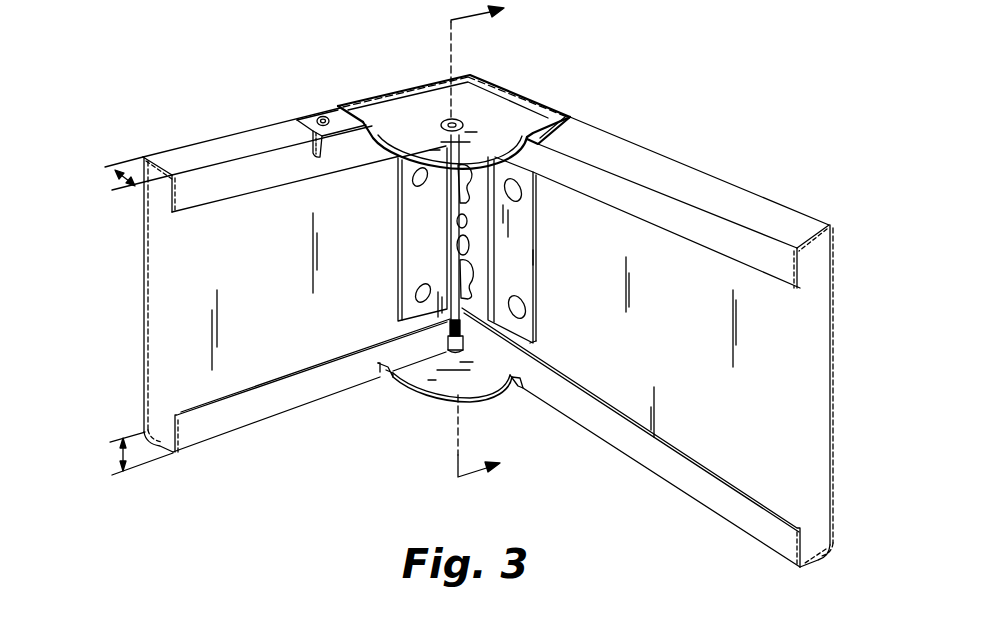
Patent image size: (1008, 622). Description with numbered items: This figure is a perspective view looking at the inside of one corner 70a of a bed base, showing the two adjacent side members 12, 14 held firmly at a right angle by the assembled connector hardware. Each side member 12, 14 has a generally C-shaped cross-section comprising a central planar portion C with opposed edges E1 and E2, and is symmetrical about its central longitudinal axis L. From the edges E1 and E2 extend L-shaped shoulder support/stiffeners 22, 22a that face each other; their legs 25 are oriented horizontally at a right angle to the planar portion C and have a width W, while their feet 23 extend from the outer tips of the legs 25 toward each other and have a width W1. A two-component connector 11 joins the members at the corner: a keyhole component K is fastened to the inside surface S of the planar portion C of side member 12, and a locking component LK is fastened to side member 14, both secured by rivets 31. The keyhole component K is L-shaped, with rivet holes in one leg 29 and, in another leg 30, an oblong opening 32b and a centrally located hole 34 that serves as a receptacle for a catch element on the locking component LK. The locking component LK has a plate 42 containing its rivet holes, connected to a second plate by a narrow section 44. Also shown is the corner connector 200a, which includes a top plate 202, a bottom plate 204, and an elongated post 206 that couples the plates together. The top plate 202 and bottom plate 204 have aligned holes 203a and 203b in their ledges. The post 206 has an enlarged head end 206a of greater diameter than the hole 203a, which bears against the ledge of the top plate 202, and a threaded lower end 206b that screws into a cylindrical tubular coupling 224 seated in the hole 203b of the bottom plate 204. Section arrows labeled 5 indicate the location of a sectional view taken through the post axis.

The side member 12 is at (228, 134).
The side member 14 is at (670, 150).
The L-shaped shoulder support/stiffener 22 is at (280, 134).
The L-shaped shoulder support/stiffener 22a is at (804, 566).
The foot 23 is at (208, 194).
The leg 25 is at (797, 222).
The top plate 202 is at (476, 70).
The corner connector 200a is at (355, 95).
The corner 70a is at (540, 104).
The leg of keyhole component 30 is at (479, 163).
The hole 203a is at (446, 127).
The enlarged head end 206a is at (452, 118).
The leg of keyhole component 29 is at (412, 264).
The plate 42 is at (534, 290).
The rivet 31 is at (414, 177).
The hole 34 is at (458, 218).
The narrow section 44 is at (496, 237).
The two-component connector 11 is at (535, 256).
The oblong-type opening 32b is at (535, 341).
The bottom plate 204 is at (487, 382).
The elongated post 206 is at (389, 375).
The lower end 206b is at (511, 379).
The hole 203b is at (454, 356).
The cylindrical tubular coupling 224 is at (445, 346).
The section line 5 is at (487, 238).
The width W is at (117, 183).
The width W1 is at (122, 453).
The central longitudinal axis L is at (290, 15).
The planar portion C is at (245, 311).
The inside surface S is at (311, 204).
The keyhole component K is at (428, 233).
The locking component LK is at (518, 222).
The edge E1 is at (700, 170).
The edge E2 is at (836, 546).